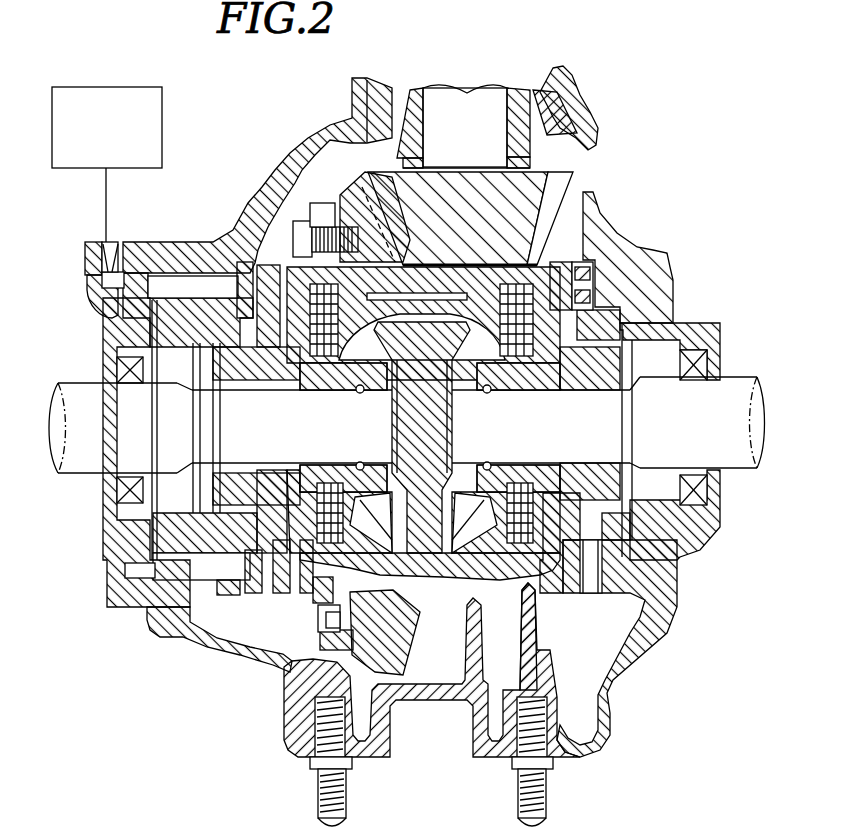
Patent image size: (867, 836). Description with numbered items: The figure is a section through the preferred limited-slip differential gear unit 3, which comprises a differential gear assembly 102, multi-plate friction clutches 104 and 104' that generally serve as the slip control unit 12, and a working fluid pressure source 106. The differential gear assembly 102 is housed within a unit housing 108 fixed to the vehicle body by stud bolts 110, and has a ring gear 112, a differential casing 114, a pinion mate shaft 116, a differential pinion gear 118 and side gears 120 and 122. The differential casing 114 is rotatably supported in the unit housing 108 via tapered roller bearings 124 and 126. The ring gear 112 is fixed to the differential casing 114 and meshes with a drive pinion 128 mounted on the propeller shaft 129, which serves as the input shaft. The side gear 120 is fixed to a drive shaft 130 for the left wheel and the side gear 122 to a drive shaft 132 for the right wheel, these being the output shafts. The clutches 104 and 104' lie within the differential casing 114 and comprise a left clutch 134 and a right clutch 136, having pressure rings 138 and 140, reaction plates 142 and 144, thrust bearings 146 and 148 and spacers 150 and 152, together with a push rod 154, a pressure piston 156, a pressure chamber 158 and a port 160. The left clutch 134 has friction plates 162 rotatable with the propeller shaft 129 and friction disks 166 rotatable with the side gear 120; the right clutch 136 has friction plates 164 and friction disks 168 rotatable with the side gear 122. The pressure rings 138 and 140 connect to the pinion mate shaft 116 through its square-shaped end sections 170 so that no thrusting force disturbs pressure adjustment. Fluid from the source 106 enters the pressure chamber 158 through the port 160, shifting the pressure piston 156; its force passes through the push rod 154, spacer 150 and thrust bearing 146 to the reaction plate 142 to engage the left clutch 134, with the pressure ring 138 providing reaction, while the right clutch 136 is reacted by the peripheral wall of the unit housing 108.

The limited-slip differential gear unit 3 is at (630, 131).
The slip control unit 12 is at (545, 290).
The differential gear assembly 102 is at (587, 194).
The multi-plate friction clutch 104 is at (268, 360).
The multi-plate friction clutch 104' is at (650, 260).
The working fluid pressure source 106 is at (116, 86).
The unit housing 108 is at (206, 250).
The stud bolts 110 is at (346, 774).
The ring gear 112 is at (350, 190).
The differential casing 114 is at (526, 582).
The pinion mate shaft 116 is at (428, 527).
The differential pinion gear 118 is at (463, 550).
The side gear 120 is at (330, 380).
The side gear 122 is at (520, 380).
The tapered roller bearing 124 is at (232, 334).
The tapered roller bearing 126 is at (624, 340).
The drive pinion 128 is at (588, 136).
The propeller shaft 129 is at (482, 110).
The drive shaft 130 is at (75, 470).
The drive shaft 132 is at (737, 470).
The left clutch 134 is at (205, 350).
The right clutch 136 is at (563, 280).
The pressure ring 138 is at (300, 220).
The pressure ring 140 is at (490, 255).
The reaction plate 142 is at (262, 275).
The reaction plate 144 is at (542, 300).
The thrust bearing 146 is at (150, 615).
The thrust bearing 148 is at (594, 594).
The spacer 150 is at (160, 576).
The spacer 152 is at (680, 557).
The push rod 154 is at (173, 284).
The pressure piston 156 is at (96, 292).
The pressure chamber 158 is at (96, 262).
The port 160 is at (106, 247).
The friction plates 162 is at (318, 575).
The friction plates 164 is at (540, 570).
The friction disks 166 is at (296, 478).
The friction disks 168 is at (500, 482).
The end sections 170 is at (430, 268).